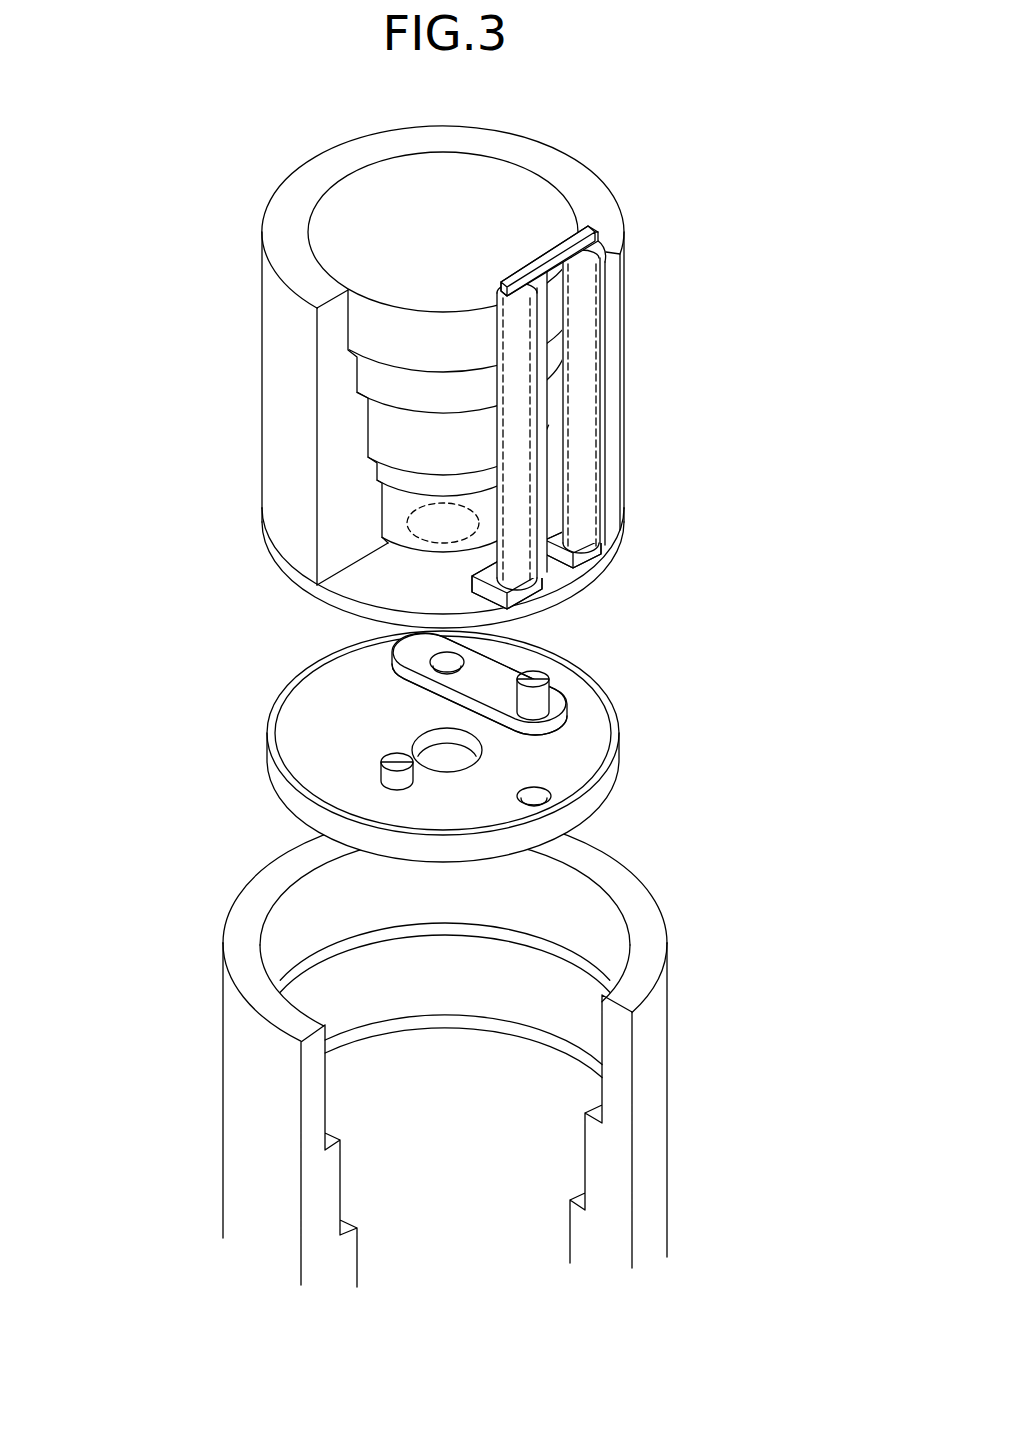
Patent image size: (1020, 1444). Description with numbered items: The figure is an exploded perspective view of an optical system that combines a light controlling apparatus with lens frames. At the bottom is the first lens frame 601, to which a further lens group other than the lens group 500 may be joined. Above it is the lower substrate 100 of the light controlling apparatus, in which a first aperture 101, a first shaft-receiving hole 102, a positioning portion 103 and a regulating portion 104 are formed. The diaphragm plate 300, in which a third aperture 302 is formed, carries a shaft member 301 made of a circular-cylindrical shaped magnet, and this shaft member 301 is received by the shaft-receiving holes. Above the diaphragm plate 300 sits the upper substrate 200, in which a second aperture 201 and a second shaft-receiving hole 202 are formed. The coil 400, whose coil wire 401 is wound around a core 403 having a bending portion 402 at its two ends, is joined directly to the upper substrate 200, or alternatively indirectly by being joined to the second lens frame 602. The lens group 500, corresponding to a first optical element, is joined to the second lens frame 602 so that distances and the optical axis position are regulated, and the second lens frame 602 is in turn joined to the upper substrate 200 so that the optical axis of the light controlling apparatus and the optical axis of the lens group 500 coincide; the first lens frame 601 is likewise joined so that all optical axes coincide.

The lower substrate 100 is at (328, 713).
The first aperture 101 is at (412, 742).
The first shaft-receiving hole 102 is at (565, 778).
The positioning portion 103 is at (383, 776).
The regulating portion 104 is at (555, 800).
The upper substrate 200 is at (387, 592).
The second aperture 201 is at (407, 527).
The second shaft-receiving hole 202 is at (580, 563).
The diaphragm plate 300 is at (488, 660).
The shaft member 301 is at (540, 683).
The third aperture 302 is at (428, 657).
The coil 400 is at (607, 412).
The coil wire 401 is at (582, 325).
The bending portion 402 is at (603, 537).
The core 403 is at (597, 283).
The lens group 500 is at (385, 430).
The first lens frame 601 is at (245, 1090).
The second lens frame 602 is at (288, 302).